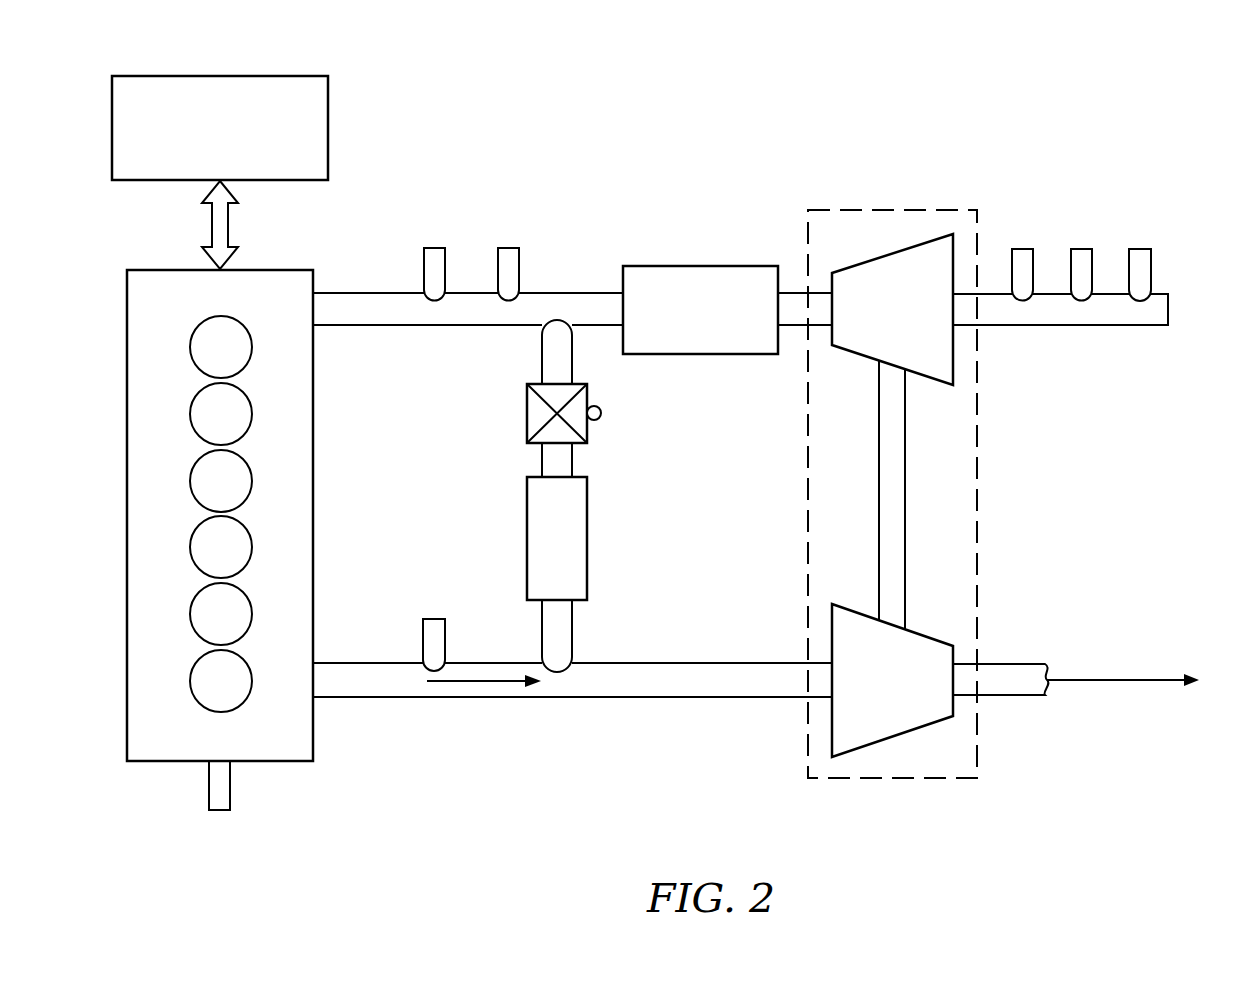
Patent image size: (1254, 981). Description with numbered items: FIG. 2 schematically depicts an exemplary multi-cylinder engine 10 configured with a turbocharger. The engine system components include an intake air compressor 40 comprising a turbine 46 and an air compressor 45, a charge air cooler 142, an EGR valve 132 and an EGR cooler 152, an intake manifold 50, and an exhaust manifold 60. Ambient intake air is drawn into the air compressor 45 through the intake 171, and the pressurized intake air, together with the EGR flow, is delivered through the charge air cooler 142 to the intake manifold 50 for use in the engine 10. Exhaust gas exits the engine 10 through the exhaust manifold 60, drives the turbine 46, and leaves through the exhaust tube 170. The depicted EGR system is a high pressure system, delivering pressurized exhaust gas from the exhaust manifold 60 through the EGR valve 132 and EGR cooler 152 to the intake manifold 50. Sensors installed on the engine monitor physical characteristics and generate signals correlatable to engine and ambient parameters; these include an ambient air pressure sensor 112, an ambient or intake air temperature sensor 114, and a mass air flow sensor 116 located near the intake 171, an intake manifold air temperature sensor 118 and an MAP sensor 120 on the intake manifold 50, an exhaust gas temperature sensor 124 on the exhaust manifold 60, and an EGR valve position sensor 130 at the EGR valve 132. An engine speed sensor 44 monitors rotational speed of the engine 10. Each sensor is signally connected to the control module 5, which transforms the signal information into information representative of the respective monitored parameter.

The control module 5 is at (317, 133).
The engine 10 is at (313, 278).
The intake air compressor 40 is at (880, 210).
The engine speed sensor 44 is at (223, 795).
The air compressor 45 is at (925, 268).
The turbine 46 is at (915, 703).
The intake manifold 50 is at (360, 315).
The exhaust manifold 60 is at (623, 687).
The ambient air pressure sensor 112 is at (1143, 263).
The intake air temperature sensor 114 is at (1085, 263).
The mass air flow sensor 116 is at (1022, 258).
The intake manifold air temperature sensor 118 is at (515, 265).
The MAP sensor 120 is at (443, 266).
The exhaust gas temperature sensor 124 is at (437, 620).
The EGR valve position sensor 130 is at (601, 413).
The EGR valve 132 is at (530, 425).
The charge air cooler 142 is at (697, 280).
The EGR cooler 152 is at (573, 533).
The exhaust tube 170 is at (1023, 655).
The intake 171 is at (1068, 333).